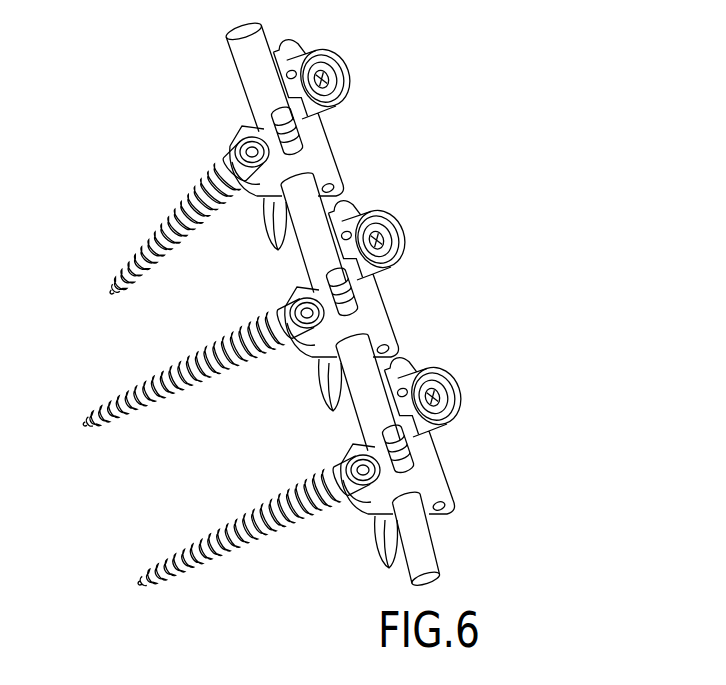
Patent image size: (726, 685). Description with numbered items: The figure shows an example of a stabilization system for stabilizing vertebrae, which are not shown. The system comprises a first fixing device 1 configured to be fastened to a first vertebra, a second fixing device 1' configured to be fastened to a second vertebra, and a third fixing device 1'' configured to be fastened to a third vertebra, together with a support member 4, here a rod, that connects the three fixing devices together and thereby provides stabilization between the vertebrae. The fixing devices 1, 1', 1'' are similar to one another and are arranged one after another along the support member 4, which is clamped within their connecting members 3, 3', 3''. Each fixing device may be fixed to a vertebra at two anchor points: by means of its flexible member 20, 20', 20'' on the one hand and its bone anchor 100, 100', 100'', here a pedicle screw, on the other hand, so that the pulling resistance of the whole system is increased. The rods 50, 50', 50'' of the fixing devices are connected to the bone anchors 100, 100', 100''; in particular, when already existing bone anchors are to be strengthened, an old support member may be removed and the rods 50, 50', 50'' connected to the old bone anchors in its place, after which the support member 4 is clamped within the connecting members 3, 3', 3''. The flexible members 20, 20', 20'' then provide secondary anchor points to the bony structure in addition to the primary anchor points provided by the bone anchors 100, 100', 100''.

The first fixing device 1 is at (305, 130).
The second fixing device 1' is at (362, 292).
The third fixing device 1'' is at (417, 455).
The connecting member 3 is at (311, 150).
The connecting member 3' is at (368, 311).
The connecting member 3'' is at (427, 468).
The support member 4 is at (242, 57).
The flexible member 20 is at (252, 229).
The flexible member 20' is at (307, 386).
The flexible member 20'' is at (360, 544).
The rod 50 is at (313, 60).
The rod 50' is at (369, 226).
The rod 50'' is at (425, 387).
The bone anchor 100 is at (183, 221).
The bone anchor 100' is at (199, 369).
The bone anchor 100'' is at (255, 527).